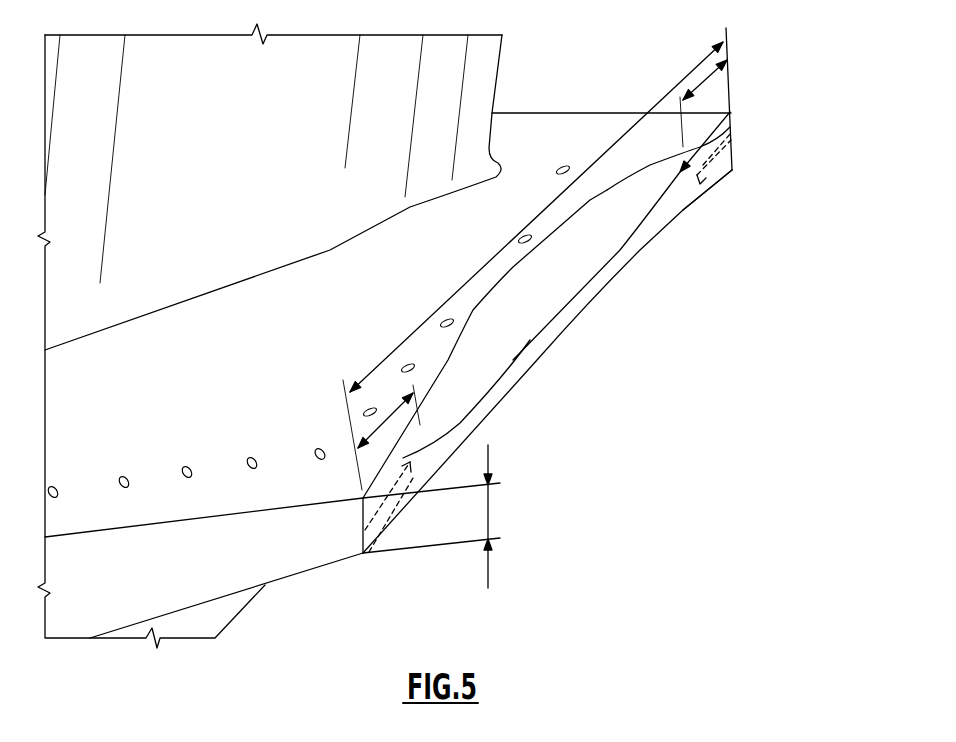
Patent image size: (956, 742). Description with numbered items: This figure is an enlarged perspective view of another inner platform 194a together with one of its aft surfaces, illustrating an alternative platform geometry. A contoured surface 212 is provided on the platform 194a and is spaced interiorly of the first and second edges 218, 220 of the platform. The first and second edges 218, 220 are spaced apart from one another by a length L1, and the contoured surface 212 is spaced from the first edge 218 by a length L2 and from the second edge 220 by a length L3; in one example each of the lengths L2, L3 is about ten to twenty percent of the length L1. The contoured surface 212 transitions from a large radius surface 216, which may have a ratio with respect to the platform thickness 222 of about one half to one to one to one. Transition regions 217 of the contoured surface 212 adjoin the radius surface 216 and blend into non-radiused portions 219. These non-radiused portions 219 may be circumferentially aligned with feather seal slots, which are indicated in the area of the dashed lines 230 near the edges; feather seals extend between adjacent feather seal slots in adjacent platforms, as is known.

The platform 194a is at (742, 167).
The contoured surface 212 is at (714, 167).
The radius surface 216 is at (578, 272).
The transition regions 217 is at (647, 187).
The first edge 218 is at (733, 133).
The non-radiused portions 219 is at (707, 112).
The second edge 220 is at (363, 528).
The platform thickness 222 is at (488, 502).
The dashed lines 230 is at (712, 172).
The length L1 is at (475, 275).
The length L2 is at (700, 84).
The length L3 is at (388, 455).